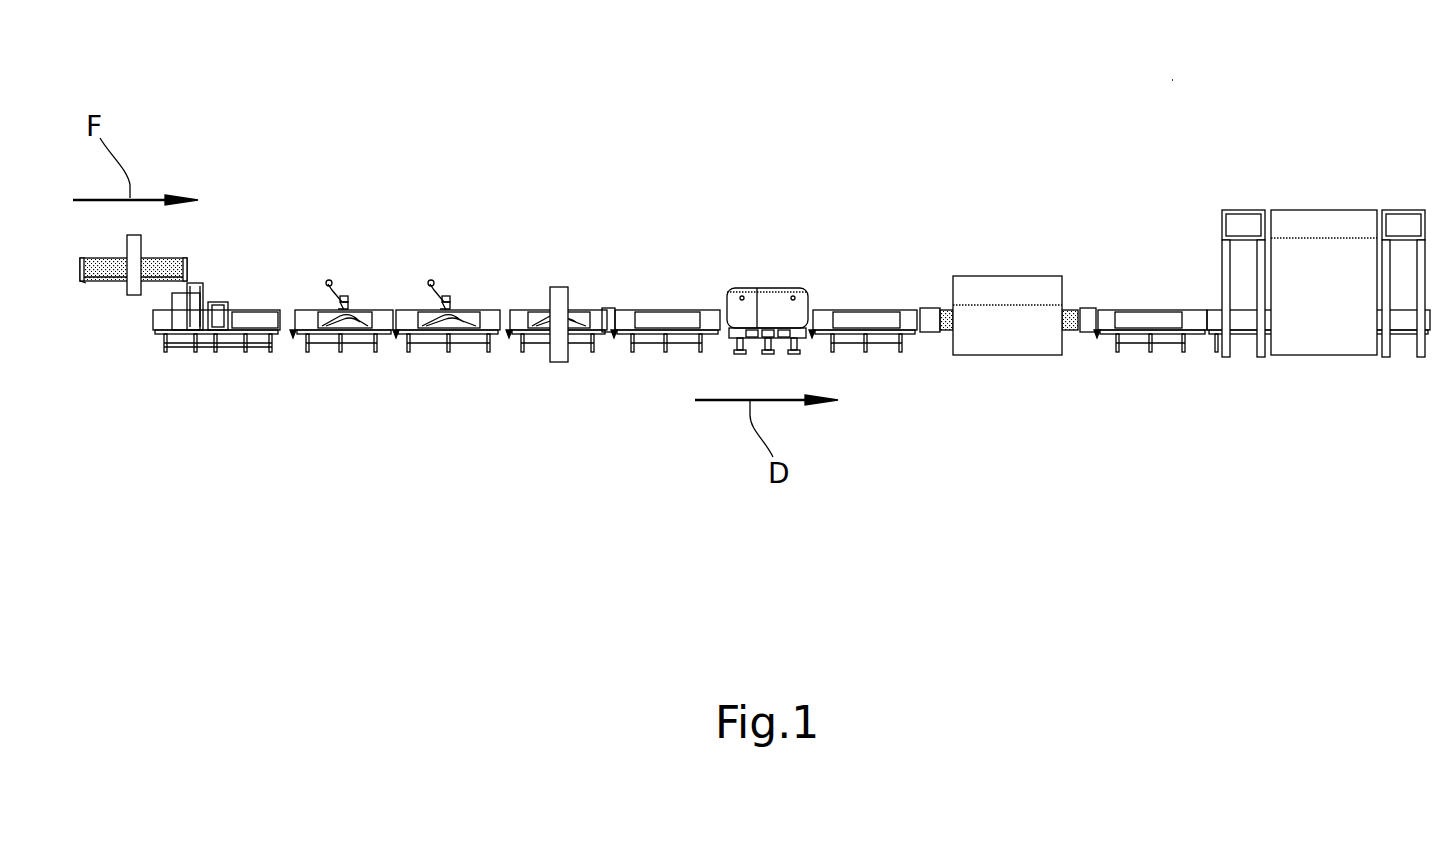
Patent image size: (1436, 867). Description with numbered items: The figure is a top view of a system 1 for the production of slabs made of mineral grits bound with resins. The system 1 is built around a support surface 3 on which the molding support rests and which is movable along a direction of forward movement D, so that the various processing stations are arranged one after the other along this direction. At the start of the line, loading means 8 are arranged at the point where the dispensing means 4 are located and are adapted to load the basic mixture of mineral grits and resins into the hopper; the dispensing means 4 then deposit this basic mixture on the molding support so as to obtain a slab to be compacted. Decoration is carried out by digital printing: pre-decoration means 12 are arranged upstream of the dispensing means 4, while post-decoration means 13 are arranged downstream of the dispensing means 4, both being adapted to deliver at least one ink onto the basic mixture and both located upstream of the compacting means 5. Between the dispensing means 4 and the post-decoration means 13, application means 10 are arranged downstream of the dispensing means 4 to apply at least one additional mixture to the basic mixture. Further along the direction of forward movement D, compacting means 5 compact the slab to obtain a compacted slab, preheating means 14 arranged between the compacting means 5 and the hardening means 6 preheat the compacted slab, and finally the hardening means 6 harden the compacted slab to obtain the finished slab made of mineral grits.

The system for the production of slabs 1 is at (1197, 62).
The support surface 3 is at (297, 318).
The dispensing means 4 is at (225, 282).
The compacting means 5 is at (775, 307).
The hardening means 6 is at (1338, 228).
The loading means 8 is at (88, 308).
The application means 10 is at (440, 265).
The pre-decoration means 12 is at (133, 245).
The post-decoration means 13 is at (558, 298).
The preheating means 14 is at (995, 290).